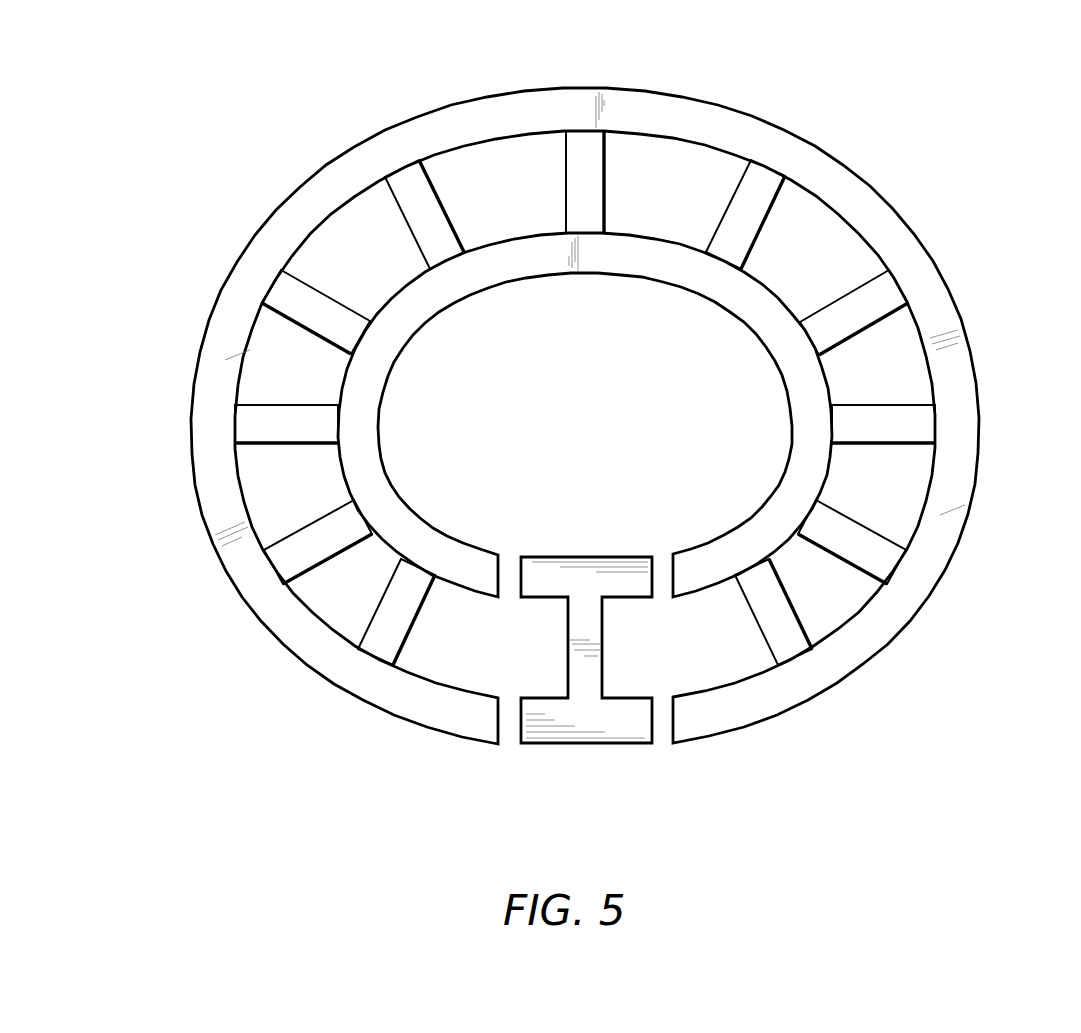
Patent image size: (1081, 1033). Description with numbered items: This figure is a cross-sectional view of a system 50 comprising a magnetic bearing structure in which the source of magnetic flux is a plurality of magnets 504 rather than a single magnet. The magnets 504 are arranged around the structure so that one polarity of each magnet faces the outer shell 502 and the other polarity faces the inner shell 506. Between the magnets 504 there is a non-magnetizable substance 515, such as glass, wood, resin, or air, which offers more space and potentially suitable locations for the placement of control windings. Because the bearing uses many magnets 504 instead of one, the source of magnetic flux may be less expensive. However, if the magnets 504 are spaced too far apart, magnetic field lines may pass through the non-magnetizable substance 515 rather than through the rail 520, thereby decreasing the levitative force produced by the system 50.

The system 50 is at (117, 132).
The outer shell 502 is at (255, 268).
The magnets 504 is at (436, 270).
The inner shell 506 is at (688, 563).
The non-magnetizable substance 515 is at (496, 184).
The rail 520 is at (585, 744).